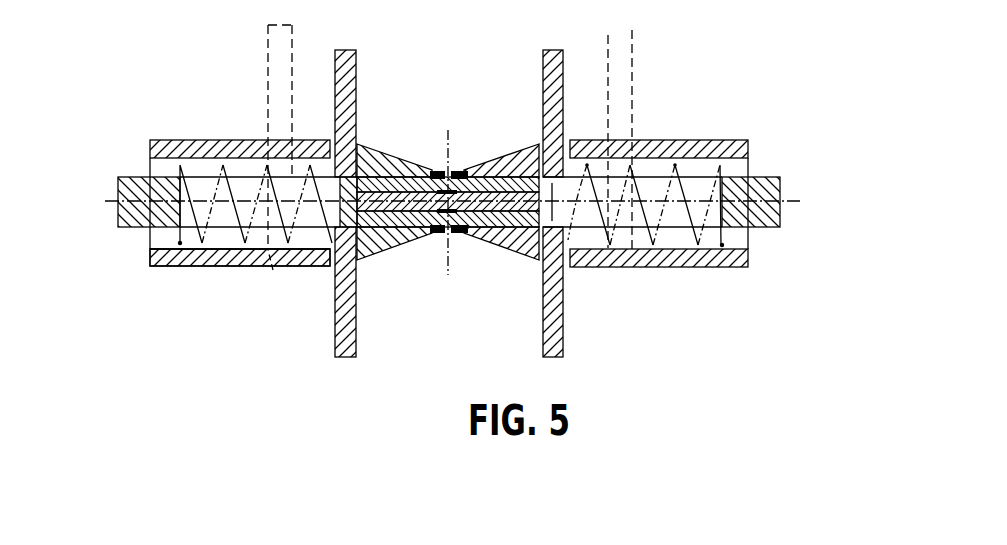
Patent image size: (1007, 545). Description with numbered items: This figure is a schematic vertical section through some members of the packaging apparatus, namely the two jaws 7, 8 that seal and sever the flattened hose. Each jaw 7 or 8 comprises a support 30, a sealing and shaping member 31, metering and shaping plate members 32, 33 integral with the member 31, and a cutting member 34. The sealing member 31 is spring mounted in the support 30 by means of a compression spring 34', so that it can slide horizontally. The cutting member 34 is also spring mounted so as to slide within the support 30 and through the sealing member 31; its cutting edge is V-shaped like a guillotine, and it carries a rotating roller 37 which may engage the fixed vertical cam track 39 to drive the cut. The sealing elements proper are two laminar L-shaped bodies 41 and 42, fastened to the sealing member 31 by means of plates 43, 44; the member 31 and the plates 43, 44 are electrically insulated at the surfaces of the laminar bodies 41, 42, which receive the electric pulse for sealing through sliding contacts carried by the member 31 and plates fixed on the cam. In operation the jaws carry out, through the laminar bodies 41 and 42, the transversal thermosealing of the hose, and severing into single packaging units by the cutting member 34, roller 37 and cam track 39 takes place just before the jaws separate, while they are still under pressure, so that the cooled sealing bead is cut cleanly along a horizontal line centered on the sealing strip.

The jaw 7 is at (146, 155).
The jaw 8 is at (582, 138).
The support 30 is at (215, 263).
The sealing and shaping member 31 is at (368, 165).
The metering and shaping plate member 32 is at (344, 52).
The metering and shaping plate member 33 is at (337, 358).
The cutting member 34 is at (429, 270).
The compression spring 34' is at (225, 284).
The rotating roller 37 is at (273, 270).
The fixed vertical cam track 39 is at (268, 56).
The laminar L-shaped body 41 is at (438, 172).
The laminar L-shaped body 42 is at (448, 234).
The plate 43 is at (392, 150).
The plate 44 is at (419, 233).